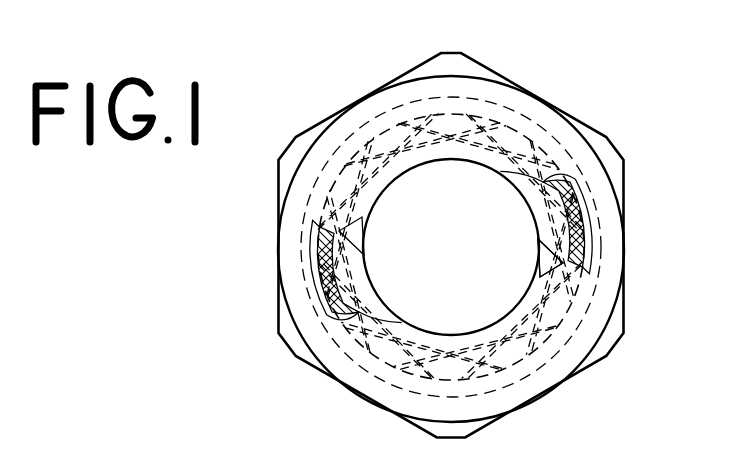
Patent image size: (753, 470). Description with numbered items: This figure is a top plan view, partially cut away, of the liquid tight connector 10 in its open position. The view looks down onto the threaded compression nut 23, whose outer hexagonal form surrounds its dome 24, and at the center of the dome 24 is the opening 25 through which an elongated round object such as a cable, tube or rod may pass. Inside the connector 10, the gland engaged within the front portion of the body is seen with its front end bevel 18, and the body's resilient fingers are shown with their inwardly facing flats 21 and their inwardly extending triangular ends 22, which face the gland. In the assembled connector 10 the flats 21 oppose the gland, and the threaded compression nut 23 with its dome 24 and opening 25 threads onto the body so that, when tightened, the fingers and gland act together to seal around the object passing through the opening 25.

The liquid tight connector 10 is at (634, 235).
The front end bevel 18 is at (546, 188).
The inwardly facing flats 21 is at (570, 244).
The inwardly extending triangular ends 22 is at (332, 303).
The threaded compression nut 23 is at (302, 125).
The dome 24 is at (490, 138).
The opening 25 is at (500, 212).